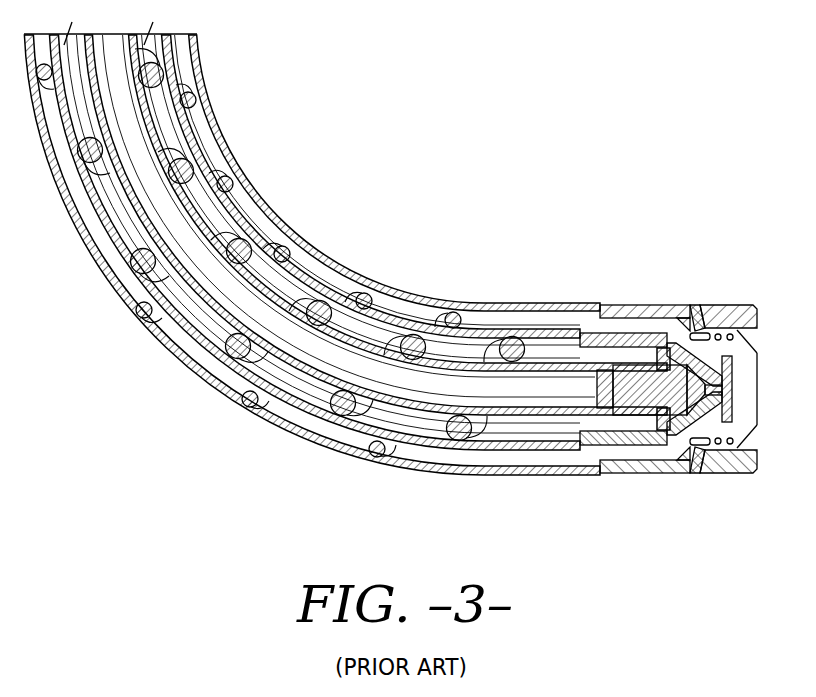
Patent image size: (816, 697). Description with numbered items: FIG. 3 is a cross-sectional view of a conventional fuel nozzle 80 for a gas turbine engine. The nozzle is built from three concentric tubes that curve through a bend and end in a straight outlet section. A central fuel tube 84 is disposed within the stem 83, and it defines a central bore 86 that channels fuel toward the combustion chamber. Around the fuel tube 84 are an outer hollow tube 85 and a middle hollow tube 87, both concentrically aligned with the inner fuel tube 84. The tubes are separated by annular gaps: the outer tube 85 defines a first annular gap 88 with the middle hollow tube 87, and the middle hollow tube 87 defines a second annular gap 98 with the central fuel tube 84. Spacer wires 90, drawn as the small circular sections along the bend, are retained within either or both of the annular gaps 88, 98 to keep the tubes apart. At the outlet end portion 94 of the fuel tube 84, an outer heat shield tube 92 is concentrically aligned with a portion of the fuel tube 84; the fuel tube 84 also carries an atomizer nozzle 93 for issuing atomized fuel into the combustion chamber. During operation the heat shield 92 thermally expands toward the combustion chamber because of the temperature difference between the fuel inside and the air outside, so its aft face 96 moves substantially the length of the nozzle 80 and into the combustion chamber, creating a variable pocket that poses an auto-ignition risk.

The fuel nozzle 80 is at (390, 249).
The stem 83 is at (143, 323).
The central fuel tube 84 is at (442, 387).
The outer hollow tube 85 is at (432, 301).
The central bore 86 is at (516, 402).
The middle hollow tube 87 is at (300, 273).
The first annular gap 88 is at (263, 227).
The spacer wires 90 is at (233, 170).
The outer heat shield tube 92 is at (548, 303).
The atomizer nozzle 93 is at (722, 423).
The outlet end portion 94 is at (757, 487).
The aft face 96 is at (757, 317).
The second annular gap 98 is at (312, 393).